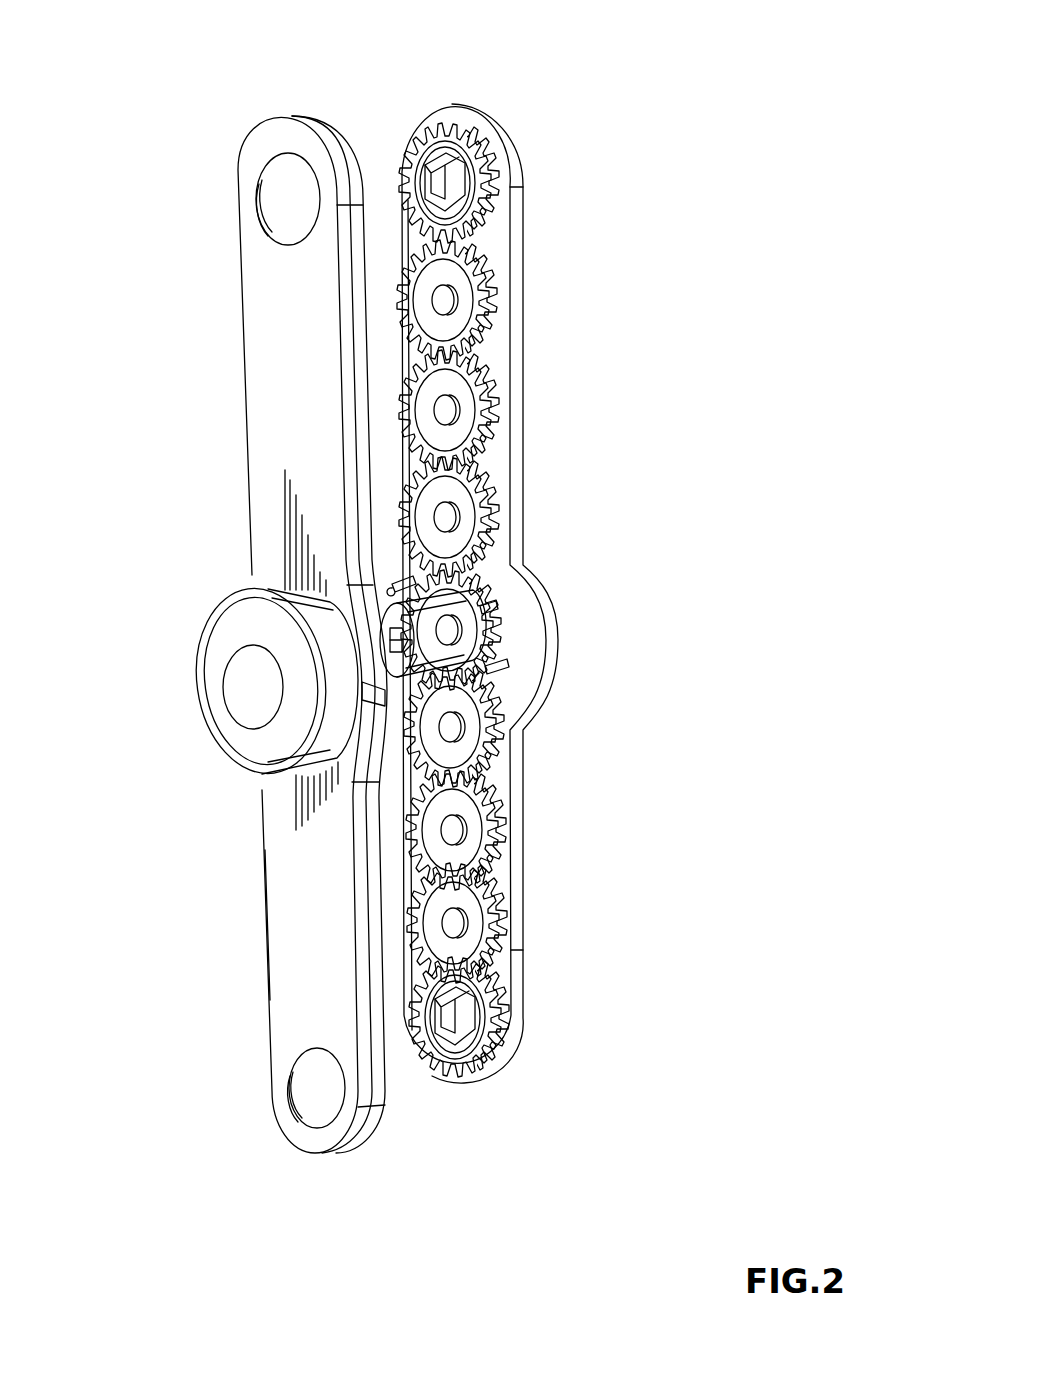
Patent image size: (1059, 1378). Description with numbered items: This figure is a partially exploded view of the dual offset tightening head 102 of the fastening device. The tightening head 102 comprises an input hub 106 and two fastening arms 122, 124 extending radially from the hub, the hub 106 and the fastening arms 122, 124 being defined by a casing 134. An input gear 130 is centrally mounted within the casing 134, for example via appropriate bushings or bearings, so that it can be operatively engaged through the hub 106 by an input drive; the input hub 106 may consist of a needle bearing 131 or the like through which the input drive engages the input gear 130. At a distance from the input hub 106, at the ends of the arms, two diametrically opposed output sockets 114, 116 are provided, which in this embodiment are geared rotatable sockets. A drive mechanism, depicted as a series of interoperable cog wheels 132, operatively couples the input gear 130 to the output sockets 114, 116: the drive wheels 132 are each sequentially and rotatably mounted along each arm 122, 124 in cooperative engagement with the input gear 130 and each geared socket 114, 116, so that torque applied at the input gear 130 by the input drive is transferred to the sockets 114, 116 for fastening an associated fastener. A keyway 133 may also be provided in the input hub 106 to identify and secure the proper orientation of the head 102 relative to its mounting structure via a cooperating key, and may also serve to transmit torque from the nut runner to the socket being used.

The dual offset tightening head 102 is at (507, 75).
The input hub 106 is at (182, 667).
The output socket 114 is at (433, 180).
The output socket 116 is at (447, 1020).
The fastening arm 122 is at (255, 378).
The fastening arm 124 is at (290, 905).
The input gear 130 is at (487, 642).
The needle bearing 131 is at (503, 612).
The cog wheels 132 is at (466, 410).
The keyway 133 is at (372, 690).
The casing 134 is at (292, 1043).